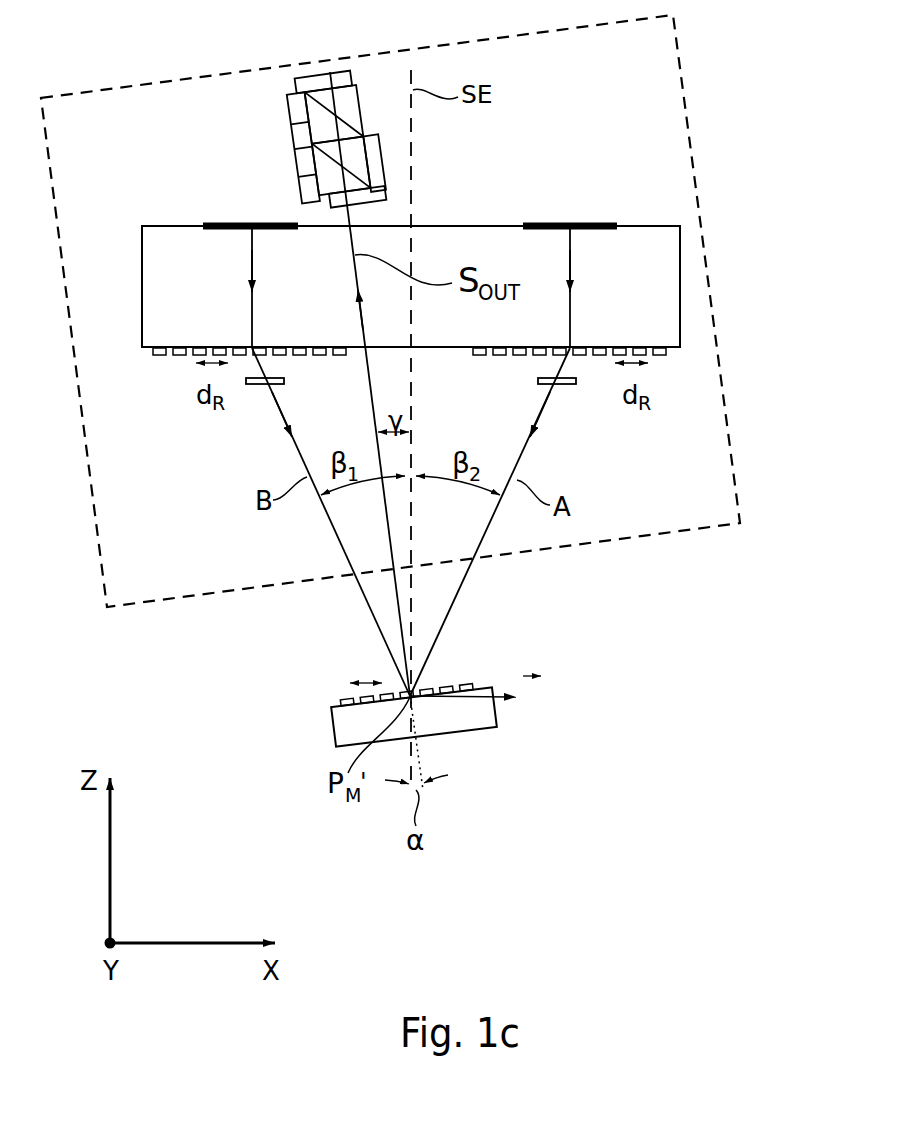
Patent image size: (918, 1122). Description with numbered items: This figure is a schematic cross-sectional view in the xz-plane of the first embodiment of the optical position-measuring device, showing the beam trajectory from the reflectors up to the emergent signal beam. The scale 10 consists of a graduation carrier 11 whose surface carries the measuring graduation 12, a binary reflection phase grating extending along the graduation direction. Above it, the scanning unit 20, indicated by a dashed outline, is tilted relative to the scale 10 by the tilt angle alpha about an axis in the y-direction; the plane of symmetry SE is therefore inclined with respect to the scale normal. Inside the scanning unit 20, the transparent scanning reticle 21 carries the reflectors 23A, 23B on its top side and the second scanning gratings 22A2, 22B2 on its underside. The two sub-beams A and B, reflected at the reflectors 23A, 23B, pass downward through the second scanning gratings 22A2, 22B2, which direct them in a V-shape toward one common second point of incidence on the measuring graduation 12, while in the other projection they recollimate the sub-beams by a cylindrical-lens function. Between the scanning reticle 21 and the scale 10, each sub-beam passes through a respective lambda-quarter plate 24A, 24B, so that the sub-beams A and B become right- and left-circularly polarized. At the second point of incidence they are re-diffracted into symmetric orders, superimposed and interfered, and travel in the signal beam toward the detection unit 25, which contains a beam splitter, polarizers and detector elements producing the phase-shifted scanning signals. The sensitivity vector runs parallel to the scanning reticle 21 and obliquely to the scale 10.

The scale 10 is at (429, 691).
The graduation carrier 11 is at (338, 730).
The measuring graduation 12 is at (468, 682).
The scanning unit 20 is at (680, 63).
The scanning reticle 21 is at (667, 253).
The second scanning grating 22B2 is at (178, 358).
The second scanning grating 22A2 is at (600, 358).
The reflector 23B is at (252, 224).
The reflector 23A is at (571, 224).
The optical polarization element 24B is at (252, 386).
The optical polarization element 24A is at (562, 386).
The detection unit 25 is at (296, 112).